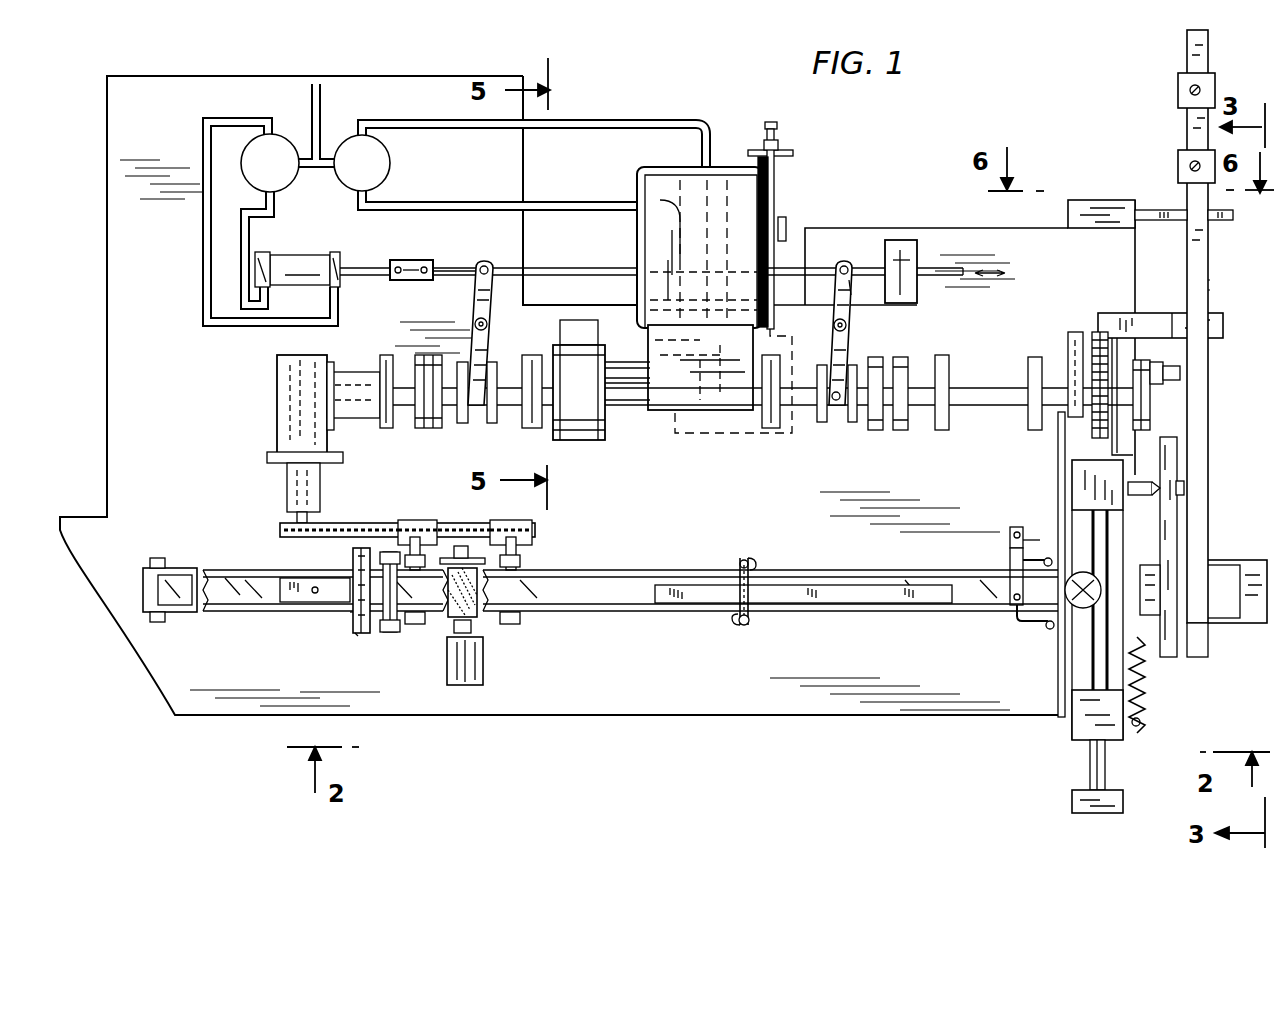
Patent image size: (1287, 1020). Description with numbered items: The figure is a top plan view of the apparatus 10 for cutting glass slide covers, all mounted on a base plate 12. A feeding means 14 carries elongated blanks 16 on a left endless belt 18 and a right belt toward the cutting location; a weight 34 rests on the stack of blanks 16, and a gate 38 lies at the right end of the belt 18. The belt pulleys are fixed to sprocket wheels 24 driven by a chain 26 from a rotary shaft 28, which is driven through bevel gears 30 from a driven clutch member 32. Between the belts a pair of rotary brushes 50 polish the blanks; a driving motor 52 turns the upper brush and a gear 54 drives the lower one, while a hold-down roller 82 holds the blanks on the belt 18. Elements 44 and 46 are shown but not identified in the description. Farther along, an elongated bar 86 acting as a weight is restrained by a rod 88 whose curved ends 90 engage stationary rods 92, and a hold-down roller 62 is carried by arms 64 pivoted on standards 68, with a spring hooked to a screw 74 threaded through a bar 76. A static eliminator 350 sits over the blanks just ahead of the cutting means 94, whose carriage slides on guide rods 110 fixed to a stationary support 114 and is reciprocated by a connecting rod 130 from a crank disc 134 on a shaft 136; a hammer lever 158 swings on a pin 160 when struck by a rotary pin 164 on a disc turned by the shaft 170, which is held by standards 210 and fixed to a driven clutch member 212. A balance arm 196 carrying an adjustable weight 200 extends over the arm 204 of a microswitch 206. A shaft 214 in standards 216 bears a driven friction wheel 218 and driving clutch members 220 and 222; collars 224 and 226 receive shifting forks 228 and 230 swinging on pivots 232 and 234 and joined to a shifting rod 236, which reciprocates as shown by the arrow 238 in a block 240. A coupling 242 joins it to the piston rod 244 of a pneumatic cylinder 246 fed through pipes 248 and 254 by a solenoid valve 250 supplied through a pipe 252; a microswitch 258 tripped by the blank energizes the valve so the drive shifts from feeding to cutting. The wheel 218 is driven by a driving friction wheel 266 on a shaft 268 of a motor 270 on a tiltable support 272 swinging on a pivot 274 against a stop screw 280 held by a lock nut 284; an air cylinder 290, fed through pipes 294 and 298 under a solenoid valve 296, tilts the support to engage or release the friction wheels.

The apparatus 10 is at (800, 735).
The base plate 12 is at (704, 696).
The feeding means 14 is at (308, 640).
The elongated blanks 16 is at (260, 602).
The left endless belt 18 is at (213, 568).
The sprocket wheels 24 is at (422, 520).
The chain 26 is at (380, 523).
The rotary shaft 28 is at (288, 488).
The bevel gears 30 is at (276, 398).
The driven clutch member 32 is at (417, 422).
The weight 34 is at (292, 603).
The gate 38 is at (356, 618).
The bracket 44 is at (358, 562).
The linkage 46 is at (358, 640).
The rotary brushes 50 is at (480, 620).
The driving motor 52 is at (450, 688).
The gear 54 is at (447, 553).
The hold-down roller 62 is at (1152, 562).
The arms 64 is at (1018, 618).
The standards 68 is at (1046, 630).
The screw 74 is at (1010, 578).
The bar 76 is at (1008, 540).
The hold-down roller 82 is at (389, 633).
The elongated bar 86 is at (872, 585).
The rod 88 is at (740, 622).
The curved ends 90 is at (740, 565).
The stationary rods 92 is at (752, 622).
The cutting means 94 is at (1140, 729).
The guide rods 110 is at (1092, 768).
The stationary support 114 is at (1072, 484).
The connecting rod 130 is at (1057, 456).
The rotary crank disc 134 is at (1076, 332).
The shaft 136 is at (1100, 438).
The elongated lever 158 is at (1177, 512).
The pin 160 is at (1162, 488).
The rotary pin 164 is at (1182, 373).
The rotary shaft 170 is at (986, 406).
The balance arm 196 is at (1208, 270).
The weight 200 is at (1178, 96).
The switch arm 204 is at (1158, 222).
The microswitch 206 is at (1115, 200).
The standards 210 is at (1028, 375).
The driven clutch member 212 is at (946, 358).
The elongated shaft 214 is at (628, 402).
The standards 216 is at (536, 428).
The driven friction wheel 218 is at (596, 442).
The driving clutch member 220 is at (472, 326).
The driving clutch member 222 is at (882, 355).
The collar 224 is at (466, 424).
The collar 226 is at (878, 432).
The shifting fork 228 is at (478, 316).
The shifting fork 230 is at (849, 285).
The pivot 232 is at (488, 325).
The pivot 234 is at (834, 325).
The shifting rod 236 is at (470, 264).
The arrow 238 is at (992, 268).
The block 240 is at (918, 247).
The coupling 242 is at (426, 258).
The piston rod 244 is at (370, 265).
The double-acting pneumatic cylinder 246 is at (283, 256).
The pipe 248 is at (272, 222).
The solenoid valve 250 is at (265, 182).
The pipe 252 is at (319, 118).
The pipe 254 is at (205, 270).
The microswitch 258 is at (1262, 552).
The driving friction wheel 266 is at (605, 316).
The rotary shaft 268 is at (620, 363).
The motor 270 is at (637, 243).
The tiltable support 272 is at (772, 196).
The pivot 274 is at (784, 220).
The stop screw 280 is at (778, 128).
The lock nut 284 is at (765, 150).
The double-acting air cylinder 290 is at (816, 424).
The pipe 294 is at (646, 120).
The solenoid valve 296 is at (391, 160).
The pipe 298 is at (605, 204).
The static eliminator 350 is at (1075, 575).